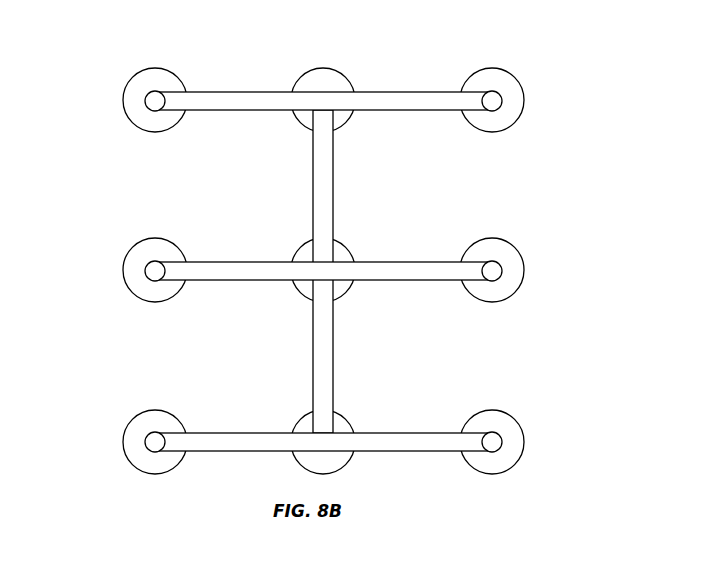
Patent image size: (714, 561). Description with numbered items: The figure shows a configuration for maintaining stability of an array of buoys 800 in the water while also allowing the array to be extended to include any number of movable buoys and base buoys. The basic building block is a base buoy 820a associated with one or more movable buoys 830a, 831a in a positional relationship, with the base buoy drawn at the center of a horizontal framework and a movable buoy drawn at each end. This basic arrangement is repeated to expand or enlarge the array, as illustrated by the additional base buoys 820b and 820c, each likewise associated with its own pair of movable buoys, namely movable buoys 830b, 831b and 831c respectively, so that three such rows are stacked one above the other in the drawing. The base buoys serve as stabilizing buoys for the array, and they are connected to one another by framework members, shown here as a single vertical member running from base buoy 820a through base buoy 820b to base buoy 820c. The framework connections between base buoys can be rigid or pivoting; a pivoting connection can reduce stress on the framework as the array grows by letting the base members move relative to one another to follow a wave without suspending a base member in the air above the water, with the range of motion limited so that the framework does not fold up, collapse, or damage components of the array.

The array of buoys 800 is at (215, 40).
The base buoy 820a is at (342, 420).
The base buoy 820b is at (342, 249).
The base buoy 820c is at (338, 83).
The movable buoy 830a is at (127, 441).
The movable buoy 830b is at (127, 99).
The movable buoy 831a is at (517, 443).
The movable buoy 831b is at (517, 271).
The movable buoy 831c is at (517, 101).